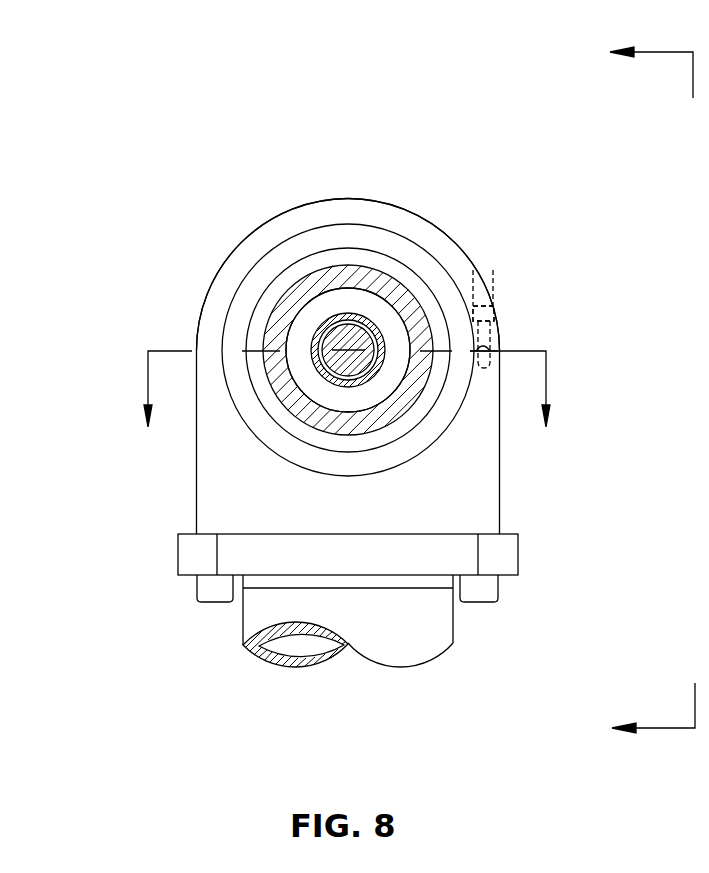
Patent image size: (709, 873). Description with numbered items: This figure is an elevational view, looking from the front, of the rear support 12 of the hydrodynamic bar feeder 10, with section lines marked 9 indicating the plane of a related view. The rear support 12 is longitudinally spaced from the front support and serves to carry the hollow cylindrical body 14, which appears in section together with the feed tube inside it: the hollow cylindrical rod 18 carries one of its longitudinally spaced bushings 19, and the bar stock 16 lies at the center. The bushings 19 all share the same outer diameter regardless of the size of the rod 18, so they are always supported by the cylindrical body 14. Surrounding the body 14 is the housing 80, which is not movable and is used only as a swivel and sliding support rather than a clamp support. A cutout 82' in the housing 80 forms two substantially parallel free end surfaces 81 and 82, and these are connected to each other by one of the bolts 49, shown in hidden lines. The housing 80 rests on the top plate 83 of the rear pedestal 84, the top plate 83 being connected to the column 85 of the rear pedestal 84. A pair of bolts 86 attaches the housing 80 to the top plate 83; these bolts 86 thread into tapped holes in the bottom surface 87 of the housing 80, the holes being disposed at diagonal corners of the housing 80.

The section line 9- 9 is at (347, 413).
The hydrodynamic bar feeder 10 is at (622, 395).
The rear support 12 is at (540, 203).
The cylindrical body 14 is at (383, 270).
The bar stock 16 is at (337, 317).
The hollow cylindrical rod 18 is at (320, 313).
The bushings 19 is at (303, 330).
The bolt 49 is at (497, 350).
The housing 80 is at (182, 301).
The free end surface 81 is at (472, 345).
The free end surface 82 is at (540, 379).
The cutout 82' is at (547, 360).
The top plate 83 is at (518, 552).
The rear pedestal 84 is at (470, 641).
The column 85 is at (453, 607).
The bolts 86 is at (197, 590).
The bottom surface 87 is at (277, 535).